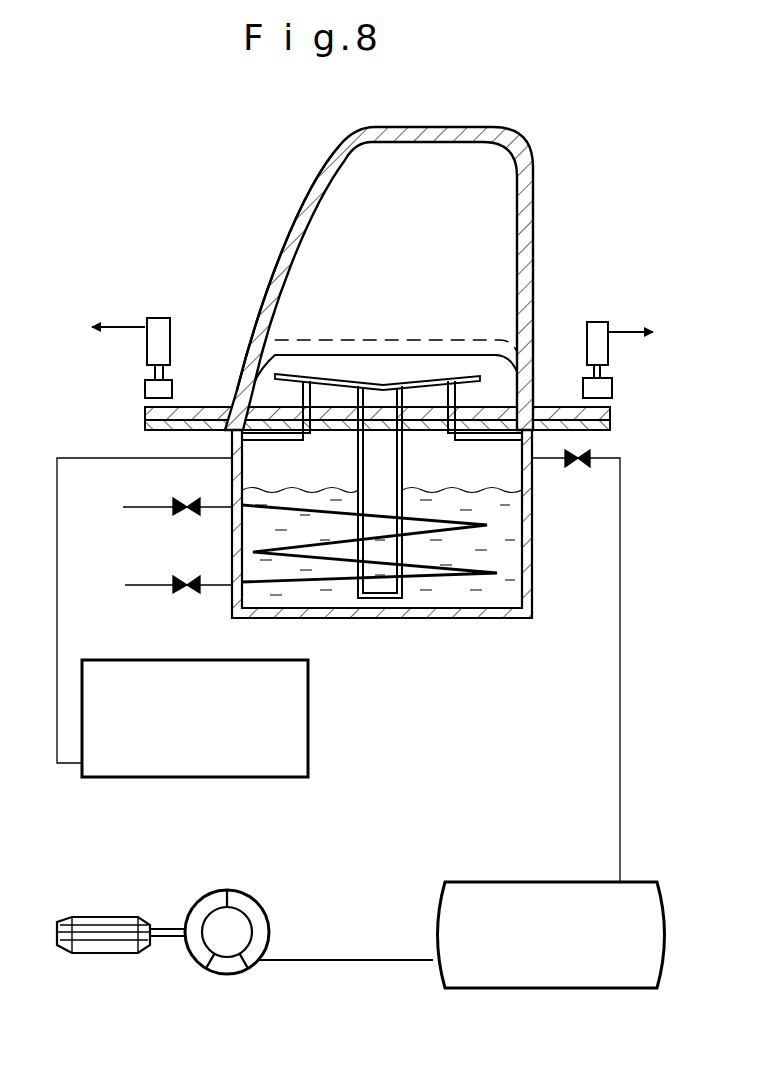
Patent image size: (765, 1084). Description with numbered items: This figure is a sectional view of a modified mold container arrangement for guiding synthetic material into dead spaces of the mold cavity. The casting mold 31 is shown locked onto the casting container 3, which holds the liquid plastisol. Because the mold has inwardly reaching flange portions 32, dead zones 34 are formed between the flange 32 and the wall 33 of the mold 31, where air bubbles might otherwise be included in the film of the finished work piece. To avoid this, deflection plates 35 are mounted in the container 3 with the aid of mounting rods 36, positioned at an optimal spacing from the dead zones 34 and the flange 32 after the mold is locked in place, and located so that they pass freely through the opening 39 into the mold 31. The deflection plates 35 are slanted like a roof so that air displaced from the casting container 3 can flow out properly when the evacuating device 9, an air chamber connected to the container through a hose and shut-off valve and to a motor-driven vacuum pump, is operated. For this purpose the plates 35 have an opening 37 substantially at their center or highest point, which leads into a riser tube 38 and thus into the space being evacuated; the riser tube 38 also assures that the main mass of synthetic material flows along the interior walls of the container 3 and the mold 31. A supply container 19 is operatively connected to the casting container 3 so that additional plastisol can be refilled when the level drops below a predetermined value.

The casting container 3 is at (525, 552).
The evacuating device 9 is at (562, 975).
The supply container 19 is at (287, 714).
The casting mold 31 is at (534, 198).
The inwardly reaching flange portion 32 is at (232, 433).
The wall of the mold 33 is at (303, 216).
The dead zone 34 is at (262, 393).
The deflection plate 35 is at (325, 375).
The mounting rod 36 is at (290, 445).
The opening 37 is at (382, 385).
The riser tube 38 is at (517, 517).
The opening 39 is at (467, 432).